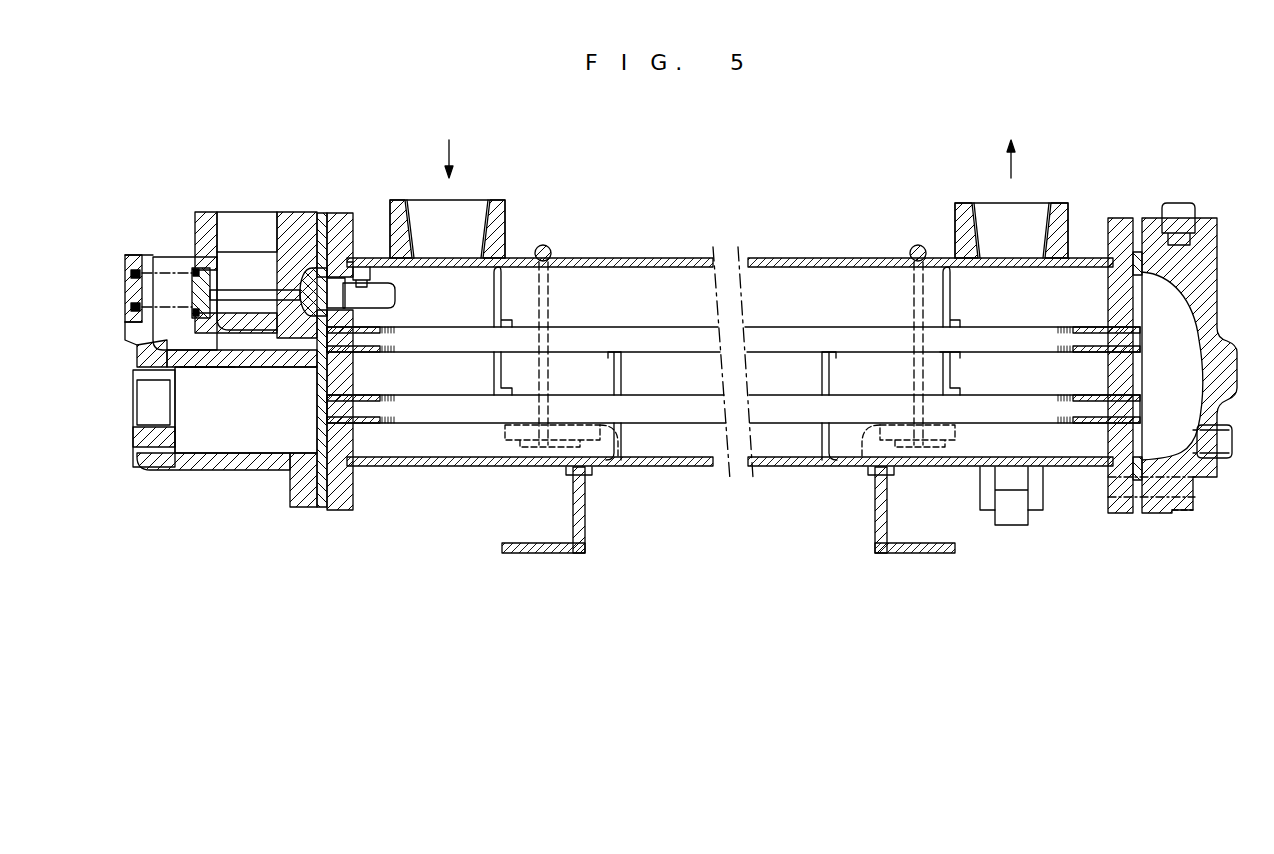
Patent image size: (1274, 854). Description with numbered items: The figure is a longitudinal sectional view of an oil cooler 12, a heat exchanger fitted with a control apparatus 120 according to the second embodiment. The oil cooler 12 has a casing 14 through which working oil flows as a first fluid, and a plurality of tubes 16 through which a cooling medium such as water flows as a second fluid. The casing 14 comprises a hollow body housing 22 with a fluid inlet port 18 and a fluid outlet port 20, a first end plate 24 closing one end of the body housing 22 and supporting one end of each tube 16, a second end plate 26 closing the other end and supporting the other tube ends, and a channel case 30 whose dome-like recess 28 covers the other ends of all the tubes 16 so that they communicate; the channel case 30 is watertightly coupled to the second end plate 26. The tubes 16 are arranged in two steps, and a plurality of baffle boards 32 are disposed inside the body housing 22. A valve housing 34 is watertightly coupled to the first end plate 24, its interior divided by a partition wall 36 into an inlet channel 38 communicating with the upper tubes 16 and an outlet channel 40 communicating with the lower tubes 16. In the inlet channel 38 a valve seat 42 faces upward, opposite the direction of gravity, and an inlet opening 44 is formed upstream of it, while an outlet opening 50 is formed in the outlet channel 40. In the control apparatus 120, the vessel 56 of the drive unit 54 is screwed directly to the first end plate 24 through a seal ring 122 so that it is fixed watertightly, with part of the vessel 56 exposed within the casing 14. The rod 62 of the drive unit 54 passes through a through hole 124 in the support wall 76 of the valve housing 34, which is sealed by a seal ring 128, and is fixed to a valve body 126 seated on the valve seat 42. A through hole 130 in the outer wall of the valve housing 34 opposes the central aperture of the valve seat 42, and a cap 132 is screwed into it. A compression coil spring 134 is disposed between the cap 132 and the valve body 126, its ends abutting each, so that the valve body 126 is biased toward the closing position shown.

The oil cooler 12 is at (600, 232).
The casing 14 is at (681, 248).
The tubes 16 is at (666, 326).
The fluid inlet port 18 is at (482, 220).
The fluid outlet port 20 is at (1046, 218).
The body housing 22 is at (805, 259).
The first end plate 24 is at (343, 512).
The second end plate 26 is at (315, 324).
The dome-like recess 28 is at (1208, 358).
The channel case 30 is at (1214, 312).
The baffle boards 32 is at (505, 297).
The valve housing 34 is at (140, 349).
The partition wall 36 is at (188, 374).
The inlet channel 38 is at (278, 367).
The outlet channel 40 is at (206, 458).
The valve seat 42 is at (200, 320).
The inlet opening 44 is at (212, 226).
The outlet opening 50 is at (150, 424).
The drive unit 54 is at (393, 280).
The vessel 56 is at (396, 300).
The rod 62 is at (232, 290).
The support wall 76 is at (208, 368).
The control apparatus 120 is at (193, 208).
The seal ring 122 is at (362, 262).
The through hole 124 is at (268, 288).
The valve body 126 is at (190, 276).
The seal ring 128 is at (236, 323).
The through hole 130 is at (136, 256).
The cap 132 is at (129, 273).
The compression coil spring 134 is at (129, 306).